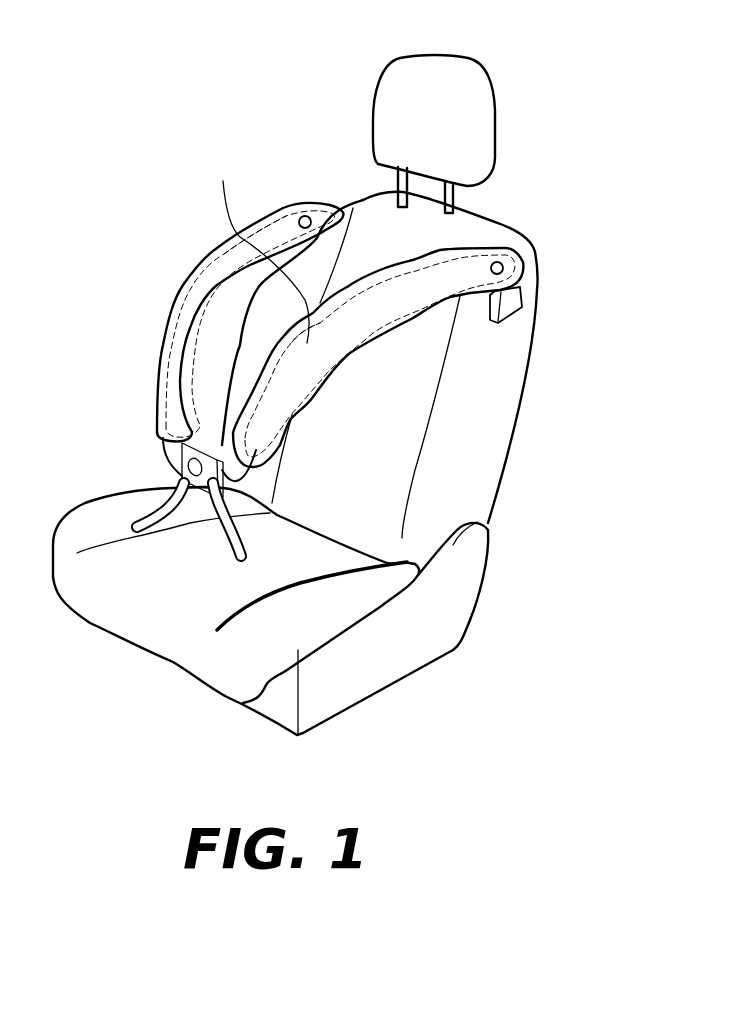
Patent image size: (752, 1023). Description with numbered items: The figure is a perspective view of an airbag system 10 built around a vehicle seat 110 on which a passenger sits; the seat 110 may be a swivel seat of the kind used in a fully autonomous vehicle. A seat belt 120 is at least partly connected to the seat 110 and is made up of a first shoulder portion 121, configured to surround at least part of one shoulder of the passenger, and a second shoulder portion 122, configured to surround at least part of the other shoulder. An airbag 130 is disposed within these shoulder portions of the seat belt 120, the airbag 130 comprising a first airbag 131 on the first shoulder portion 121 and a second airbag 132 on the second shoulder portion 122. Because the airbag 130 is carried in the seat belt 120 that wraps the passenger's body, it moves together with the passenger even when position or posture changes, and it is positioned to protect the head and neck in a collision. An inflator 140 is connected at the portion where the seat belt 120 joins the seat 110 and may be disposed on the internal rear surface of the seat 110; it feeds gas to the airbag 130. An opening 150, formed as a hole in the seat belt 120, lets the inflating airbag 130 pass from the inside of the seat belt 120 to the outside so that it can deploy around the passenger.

The airbag system 10 is at (113, 33).
The seat 110 is at (500, 432).
The seat belt 120 is at (102, 263).
The first shoulder portion 121 is at (180, 293).
The second shoulder portion 122 is at (270, 368).
The airbag 130 is at (288, 152).
The first airbag 131 is at (299, 217).
The second airbag 132 is at (271, 250).
The inflator 140 is at (529, 293).
The opening 150 is at (307, 216).